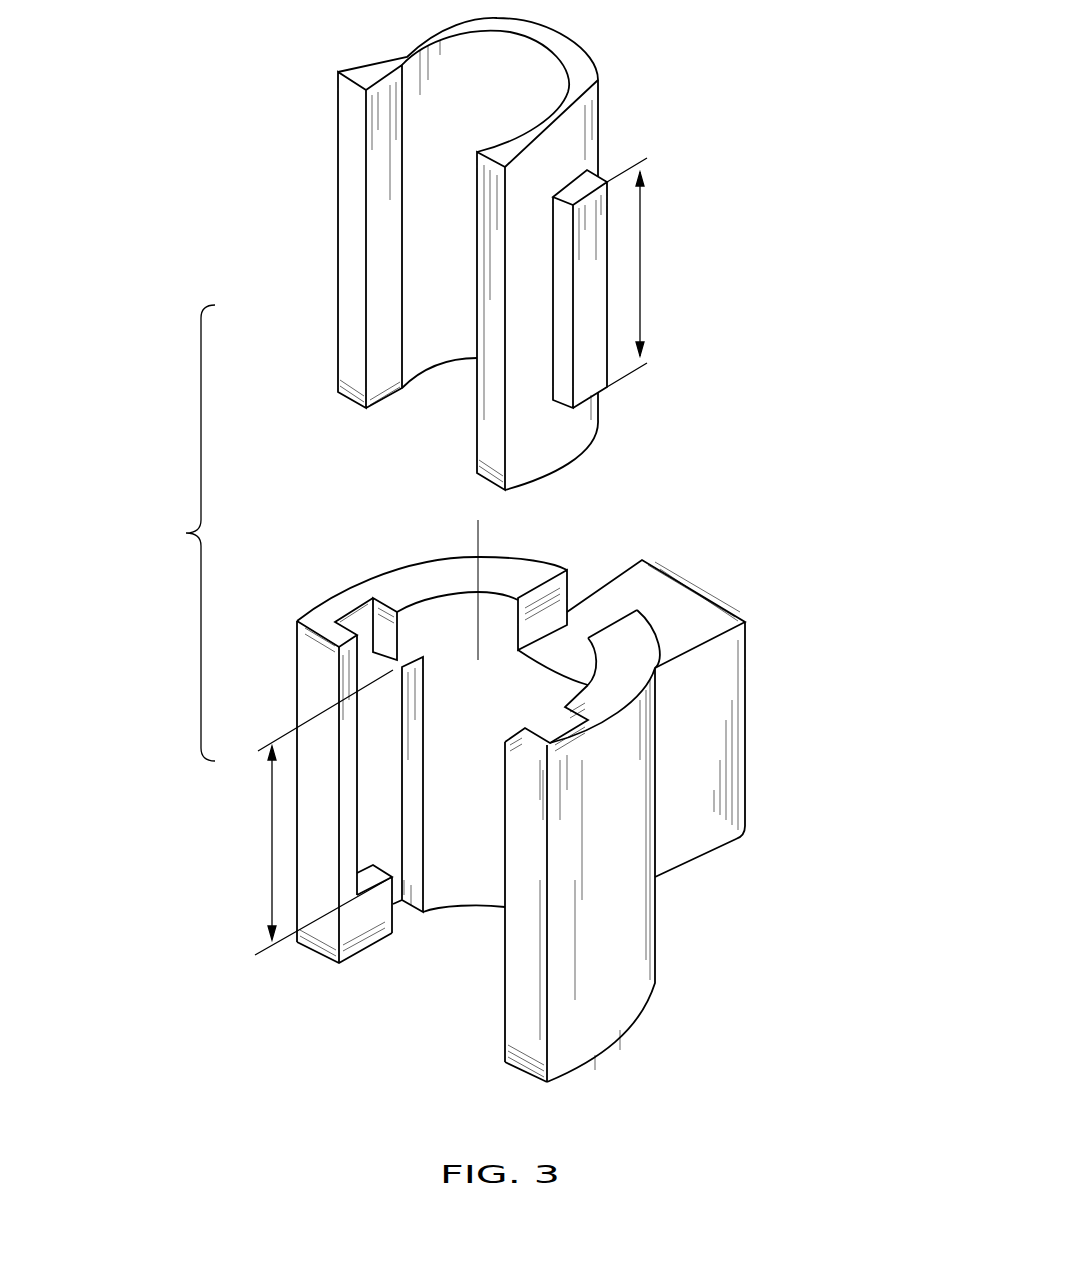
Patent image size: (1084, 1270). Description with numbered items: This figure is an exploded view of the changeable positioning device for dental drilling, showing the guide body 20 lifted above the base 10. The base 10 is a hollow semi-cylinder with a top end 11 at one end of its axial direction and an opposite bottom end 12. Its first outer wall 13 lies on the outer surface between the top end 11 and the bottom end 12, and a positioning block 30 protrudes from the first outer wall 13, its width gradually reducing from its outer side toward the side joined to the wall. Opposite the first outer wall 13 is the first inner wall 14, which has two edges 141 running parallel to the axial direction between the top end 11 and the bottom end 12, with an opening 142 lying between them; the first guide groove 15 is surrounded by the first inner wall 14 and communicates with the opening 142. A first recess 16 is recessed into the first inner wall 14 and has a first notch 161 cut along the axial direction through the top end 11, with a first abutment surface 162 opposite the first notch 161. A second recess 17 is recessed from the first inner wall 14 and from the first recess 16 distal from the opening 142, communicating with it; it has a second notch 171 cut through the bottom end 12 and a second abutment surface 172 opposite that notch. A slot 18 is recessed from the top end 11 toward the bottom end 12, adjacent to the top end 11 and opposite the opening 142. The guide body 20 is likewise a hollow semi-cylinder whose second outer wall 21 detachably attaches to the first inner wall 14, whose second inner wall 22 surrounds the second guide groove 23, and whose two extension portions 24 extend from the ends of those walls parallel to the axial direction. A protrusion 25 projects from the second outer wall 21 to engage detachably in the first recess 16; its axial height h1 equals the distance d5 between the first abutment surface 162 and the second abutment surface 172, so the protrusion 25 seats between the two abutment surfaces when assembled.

The base 10 is at (498, 780).
The top end 11 is at (455, 568).
The bottom end 12 is at (603, 1050).
The first outer wall 13 is at (632, 913).
The first inner wall 14 is at (500, 610).
The edges 141 is at (338, 935).
The opening 142 is at (402, 915).
The first guide groove 15 is at (545, 705).
The first recess 16 is at (366, 602).
The first notch 161 is at (330, 619).
The first abutment surface 162 is at (377, 877).
The second recess 17 is at (397, 747).
The second notch 171 is at (440, 932).
The second abutment surface 172 is at (407, 663).
The slot 18 is at (568, 643).
The guide body 20 is at (486, 249).
The second outer wall 21 is at (592, 147).
The second inner wall 22 is at (425, 62).
The second guide groove 23 is at (500, 90).
The extension portions 24 is at (350, 121).
The protrusion 25 is at (590, 385).
The positioning block 30 is at (695, 587).
The axial height of the protrusion h1 is at (641, 272).
The distance between the first abutment surface and the second abutment surface d5 is at (317, 812).